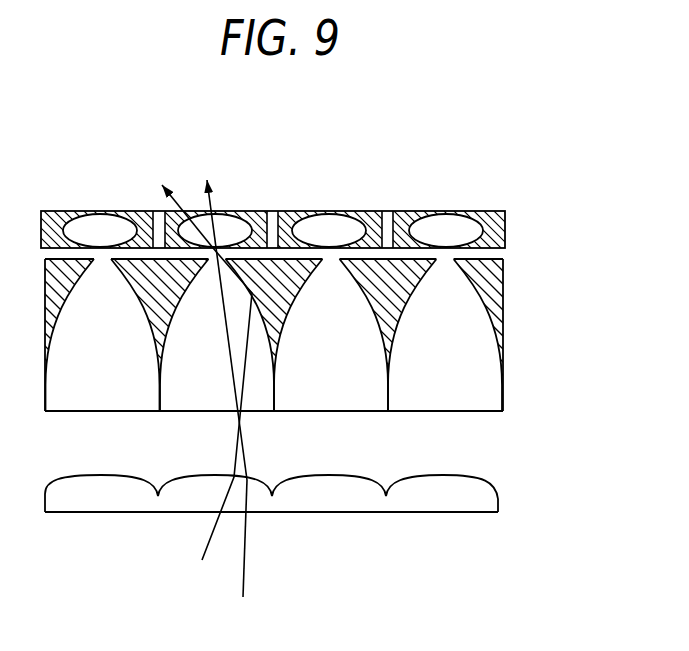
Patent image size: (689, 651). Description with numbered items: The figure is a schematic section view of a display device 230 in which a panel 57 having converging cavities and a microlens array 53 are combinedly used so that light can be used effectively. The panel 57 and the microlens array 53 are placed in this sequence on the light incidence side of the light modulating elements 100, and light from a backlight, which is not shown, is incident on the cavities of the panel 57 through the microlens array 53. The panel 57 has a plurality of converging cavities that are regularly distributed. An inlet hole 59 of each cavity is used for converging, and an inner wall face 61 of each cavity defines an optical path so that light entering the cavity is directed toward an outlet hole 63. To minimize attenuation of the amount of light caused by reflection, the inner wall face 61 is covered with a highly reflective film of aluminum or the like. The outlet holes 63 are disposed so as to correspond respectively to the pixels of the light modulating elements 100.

The display device 230 is at (451, 199).
The light modulating elements 100 is at (519, 236).
The panel having converging cavities 57 is at (505, 327).
The inlet hole 59 is at (443, 413).
The inner wall face 61 is at (400, 333).
The outlet hole 63 is at (443, 263).
The microlens array 53 is at (500, 500).